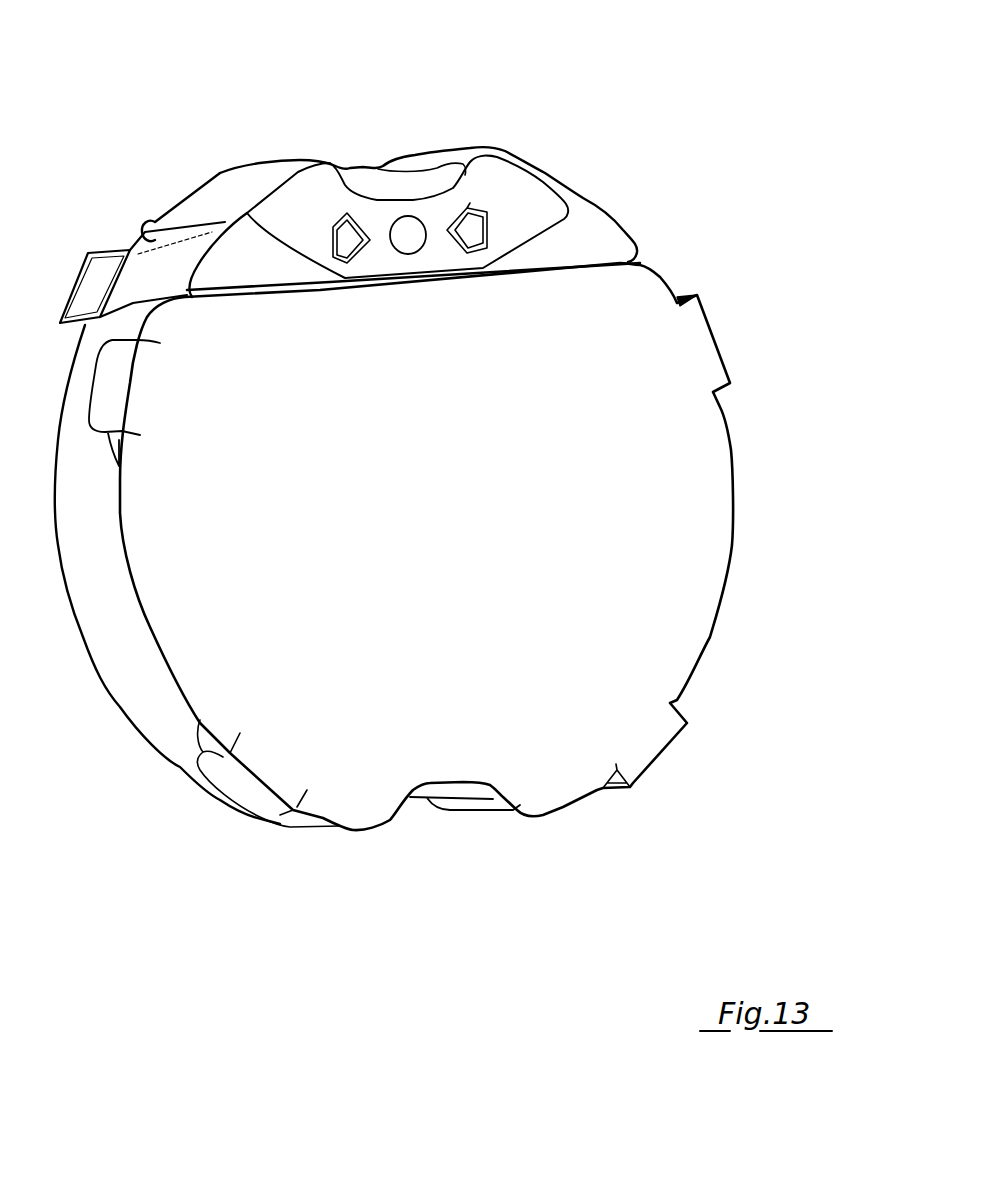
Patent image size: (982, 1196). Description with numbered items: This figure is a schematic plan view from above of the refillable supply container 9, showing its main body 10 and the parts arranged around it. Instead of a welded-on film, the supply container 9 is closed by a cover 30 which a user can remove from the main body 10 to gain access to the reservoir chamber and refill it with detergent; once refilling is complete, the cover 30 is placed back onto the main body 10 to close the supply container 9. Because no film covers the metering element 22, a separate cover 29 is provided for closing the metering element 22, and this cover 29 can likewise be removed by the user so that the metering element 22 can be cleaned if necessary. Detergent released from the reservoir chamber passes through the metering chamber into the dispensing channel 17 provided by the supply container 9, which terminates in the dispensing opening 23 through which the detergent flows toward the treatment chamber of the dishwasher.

The supply container 9 is at (680, 203).
The main body 10 is at (137, 680).
The dispensing channel 17 is at (160, 263).
The metering element 22 is at (302, 220).
The dispensing opening 23 is at (93, 288).
The cover 29 is at (535, 190).
The cover 30 is at (380, 770).